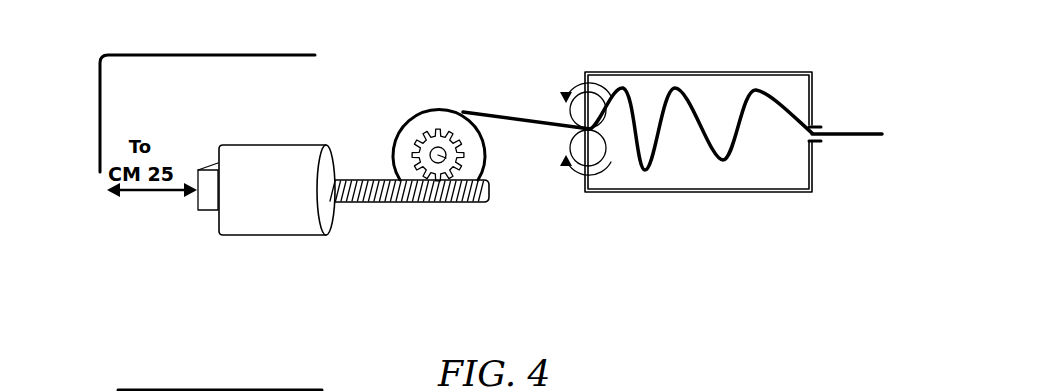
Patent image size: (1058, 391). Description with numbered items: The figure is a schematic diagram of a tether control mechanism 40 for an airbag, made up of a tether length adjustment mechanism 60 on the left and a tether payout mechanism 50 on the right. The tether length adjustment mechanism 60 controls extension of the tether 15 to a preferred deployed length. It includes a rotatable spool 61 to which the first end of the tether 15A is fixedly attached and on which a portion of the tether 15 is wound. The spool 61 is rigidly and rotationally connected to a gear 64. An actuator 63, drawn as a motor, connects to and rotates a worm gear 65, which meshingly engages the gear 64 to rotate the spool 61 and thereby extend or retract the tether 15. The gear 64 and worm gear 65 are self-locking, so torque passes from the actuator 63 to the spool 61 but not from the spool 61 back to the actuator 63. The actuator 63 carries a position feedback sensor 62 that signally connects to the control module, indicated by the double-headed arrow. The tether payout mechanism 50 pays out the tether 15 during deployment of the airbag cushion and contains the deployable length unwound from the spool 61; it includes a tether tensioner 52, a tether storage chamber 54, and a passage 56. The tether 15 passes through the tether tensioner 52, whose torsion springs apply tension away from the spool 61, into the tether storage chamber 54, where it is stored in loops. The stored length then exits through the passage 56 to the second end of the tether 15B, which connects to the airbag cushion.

The tether control mechanism 40 is at (102, 56).
The tether length adjustment mechanism 60 is at (314, 179).
The position feedback sensor 62 is at (212, 168).
The actuator 63 is at (277, 150).
The gear 64 is at (436, 150).
The worm gear 65 is at (378, 204).
The rotatable spool 61 is at (432, 116).
The first end of the tether 15A is at (487, 112).
The tether 15 is at (692, 117).
The second end of the tether 15B is at (850, 132).
The tether payout mechanism 50 is at (693, 172).
The tether tensioner 52 is at (580, 178).
The tether storage chamber 54 is at (683, 173).
The passage 56 is at (818, 144).